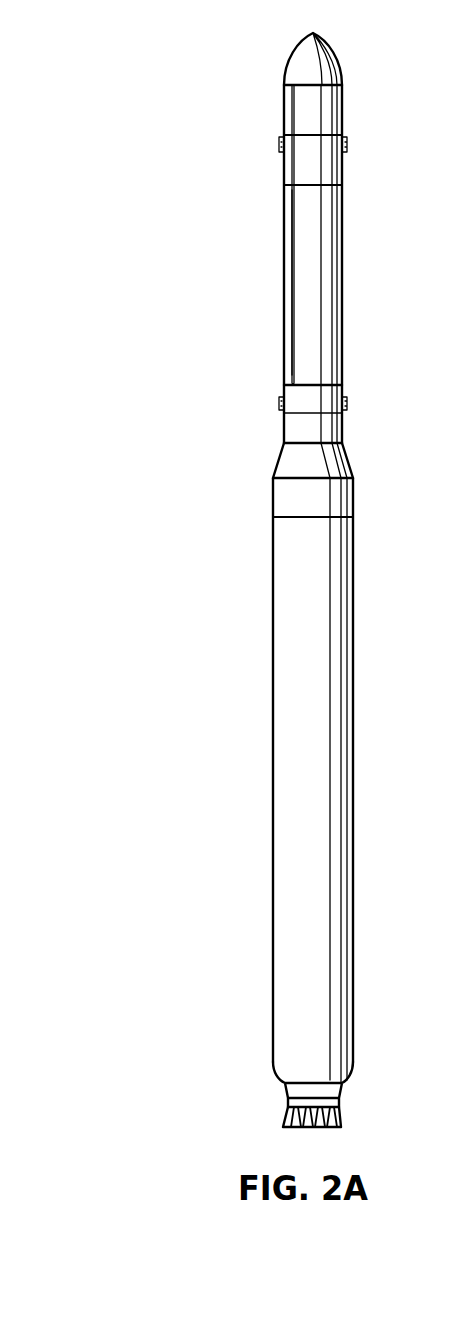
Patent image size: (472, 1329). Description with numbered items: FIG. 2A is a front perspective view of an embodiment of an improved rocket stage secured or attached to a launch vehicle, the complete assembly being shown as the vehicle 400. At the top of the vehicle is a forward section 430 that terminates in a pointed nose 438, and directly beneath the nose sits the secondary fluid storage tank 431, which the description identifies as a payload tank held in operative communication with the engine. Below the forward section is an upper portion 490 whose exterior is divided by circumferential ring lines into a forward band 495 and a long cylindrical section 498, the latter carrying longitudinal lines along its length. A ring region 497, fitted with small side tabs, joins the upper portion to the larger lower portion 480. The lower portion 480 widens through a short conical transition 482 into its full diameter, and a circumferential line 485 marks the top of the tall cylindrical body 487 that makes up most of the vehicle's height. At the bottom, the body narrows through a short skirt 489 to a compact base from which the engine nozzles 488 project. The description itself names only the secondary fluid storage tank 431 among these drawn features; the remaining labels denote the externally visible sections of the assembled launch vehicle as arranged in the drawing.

The launch vehicle 400 is at (136, 242).
The payload fairing 430 is at (248, 55).
The nose cone 438 is at (335, 52).
The secondary fluid storage tank 431 is at (343, 110).
The upper stage 490 is at (235, 135).
The upper stage forward section 495 is at (316, 172).
The upper stage propellant tank 498 is at (310, 278).
The interstage adapter 497 is at (318, 407).
The booster stage 480 is at (201, 424).
The forward skirt 482 is at (276, 493).
The tank bulkhead 485 is at (357, 524).
The booster propellant tank 487 is at (286, 742).
The aft skirt 489 is at (350, 1078).
The engine nozzles 488 is at (283, 1127).